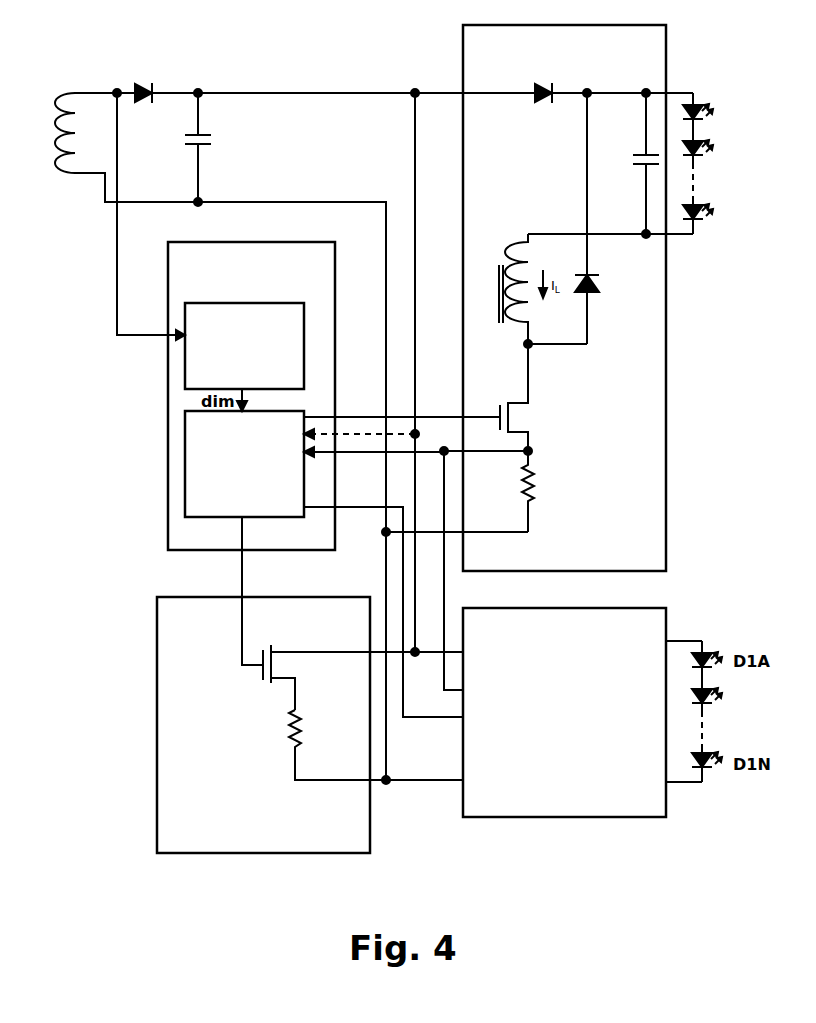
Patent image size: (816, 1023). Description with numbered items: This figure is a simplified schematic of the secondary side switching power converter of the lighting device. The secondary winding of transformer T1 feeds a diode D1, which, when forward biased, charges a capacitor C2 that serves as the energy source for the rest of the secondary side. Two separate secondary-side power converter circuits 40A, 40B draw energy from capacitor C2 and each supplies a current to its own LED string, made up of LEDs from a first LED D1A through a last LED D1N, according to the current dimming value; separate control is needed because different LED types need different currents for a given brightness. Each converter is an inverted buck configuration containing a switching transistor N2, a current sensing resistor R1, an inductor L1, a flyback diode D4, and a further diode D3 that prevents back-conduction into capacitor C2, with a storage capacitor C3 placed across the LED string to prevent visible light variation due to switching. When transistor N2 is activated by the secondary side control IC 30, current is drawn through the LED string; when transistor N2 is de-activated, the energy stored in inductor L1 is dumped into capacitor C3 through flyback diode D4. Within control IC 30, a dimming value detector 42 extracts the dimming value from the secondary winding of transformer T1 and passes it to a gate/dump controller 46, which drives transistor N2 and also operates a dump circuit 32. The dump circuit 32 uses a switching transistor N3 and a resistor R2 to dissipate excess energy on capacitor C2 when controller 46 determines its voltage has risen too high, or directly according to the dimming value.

The secondary side control IC 30 is at (251, 396).
The dump circuit 32 is at (263, 725).
The secondary-side power converter circuit 40A is at (564, 298).
The secondary-side power converter circuit 40B is at (564, 712).
The dimming value detector 42 is at (244, 346).
The gate/dump controller 46 is at (244, 464).
The transformer T1 is at (103, 122).
The diode D1 is at (148, 77).
The capacitor C2 is at (183, 147).
The diode D3 is at (544, 110).
The storage capacitor C3 is at (640, 163).
The inductor L1 is at (502, 286).
The flyback diode D4 is at (604, 218).
The switching transistor N2 is at (435, 397).
The current sensing resistor R1 is at (543, 491).
The switching transistor N3 is at (352, 613).
The resistor R2 is at (337, 745).
The LED D1A is at (718, 163).
The LED D1N is at (735, 216).